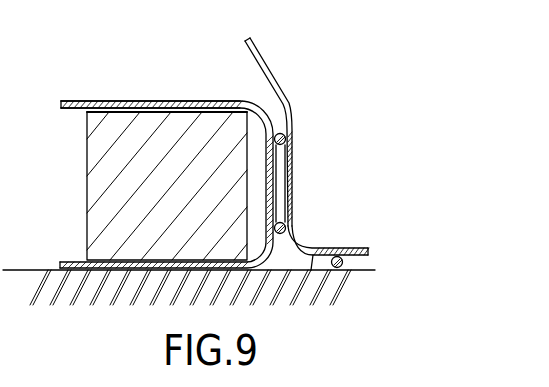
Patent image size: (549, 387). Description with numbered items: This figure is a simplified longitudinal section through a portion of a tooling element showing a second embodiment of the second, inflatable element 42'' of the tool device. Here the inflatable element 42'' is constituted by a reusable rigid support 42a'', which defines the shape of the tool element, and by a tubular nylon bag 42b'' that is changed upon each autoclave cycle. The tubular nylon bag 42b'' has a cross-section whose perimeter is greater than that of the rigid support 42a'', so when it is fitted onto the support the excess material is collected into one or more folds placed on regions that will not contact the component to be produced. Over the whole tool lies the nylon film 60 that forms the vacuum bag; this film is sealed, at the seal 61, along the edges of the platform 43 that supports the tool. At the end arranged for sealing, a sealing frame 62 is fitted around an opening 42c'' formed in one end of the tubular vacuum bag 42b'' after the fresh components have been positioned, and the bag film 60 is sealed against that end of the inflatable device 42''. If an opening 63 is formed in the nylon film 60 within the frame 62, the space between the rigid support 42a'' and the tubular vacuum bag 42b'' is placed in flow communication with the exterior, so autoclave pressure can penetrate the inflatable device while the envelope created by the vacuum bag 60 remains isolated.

The inflatable element 42'' is at (166, 142).
The rigid support 42a'' is at (150, 64).
The tubular nylon bag 42b'' is at (154, 64).
The opening 42c'' is at (141, 186).
The nylon film 60 is at (272, 64).
The sealing frame 62 is at (290, 143).
The opening 63 is at (294, 181).
The platform 43 is at (330, 248).
The seal 61 is at (345, 264).